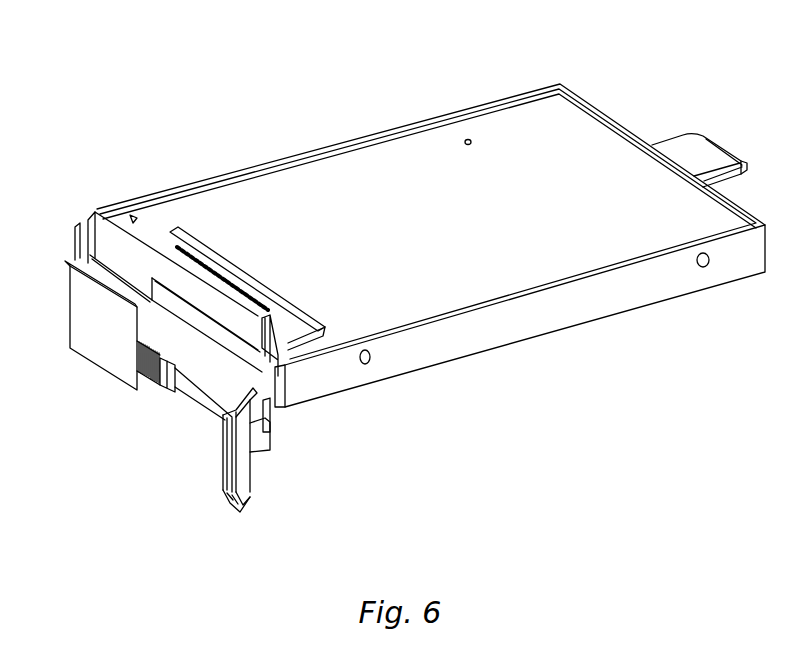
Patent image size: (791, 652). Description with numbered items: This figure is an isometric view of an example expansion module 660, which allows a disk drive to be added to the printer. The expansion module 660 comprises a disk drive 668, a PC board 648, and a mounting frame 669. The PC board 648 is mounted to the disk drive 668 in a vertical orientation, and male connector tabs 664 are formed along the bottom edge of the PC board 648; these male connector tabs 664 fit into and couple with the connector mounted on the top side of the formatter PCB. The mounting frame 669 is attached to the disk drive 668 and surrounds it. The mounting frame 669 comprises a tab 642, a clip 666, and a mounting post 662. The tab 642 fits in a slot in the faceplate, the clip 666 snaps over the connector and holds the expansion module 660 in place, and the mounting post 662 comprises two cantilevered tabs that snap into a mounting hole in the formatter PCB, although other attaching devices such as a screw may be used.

The expansion module 660 is at (296, 93).
The tab 642 is at (685, 137).
The PC board 648 is at (113, 246).
The disk drive 668 is at (457, 243).
The mounting frame 669 is at (496, 337).
The clip 666 is at (84, 342).
The male connector tabs 664 is at (158, 383).
The mounting post 662 is at (253, 479).